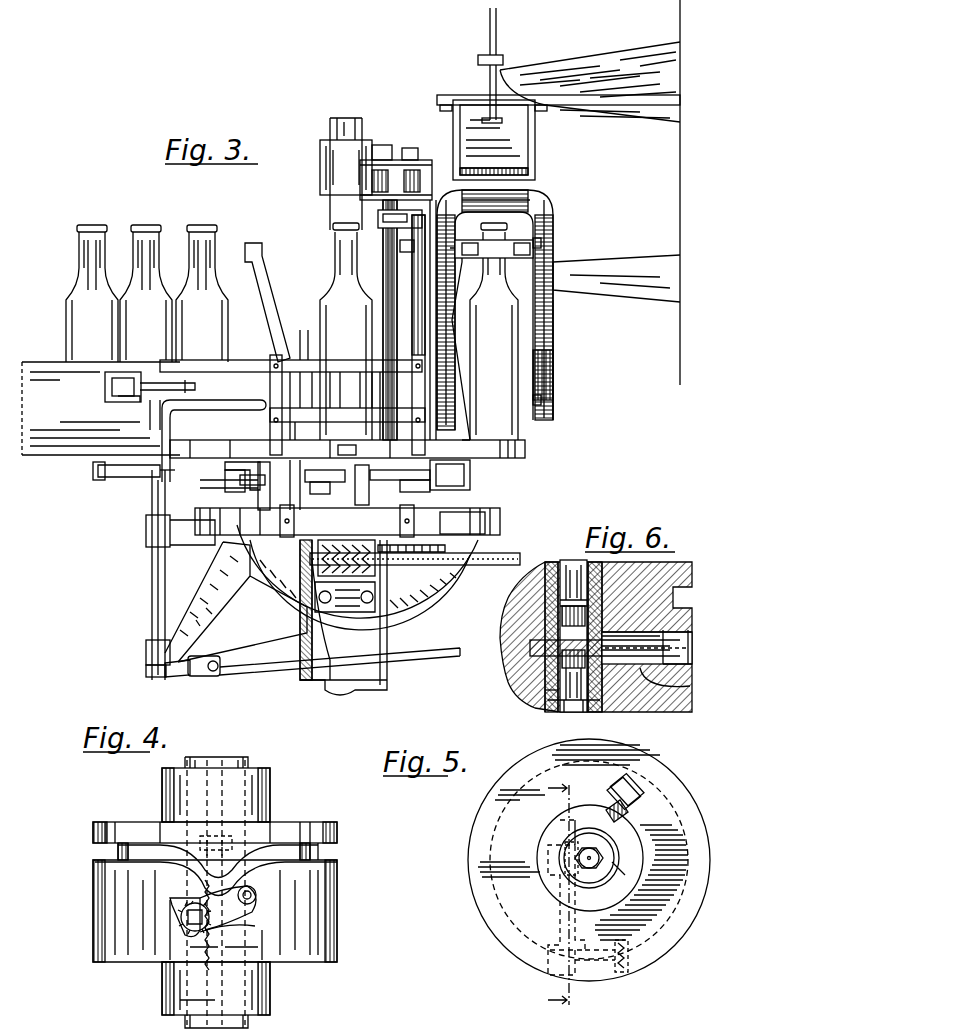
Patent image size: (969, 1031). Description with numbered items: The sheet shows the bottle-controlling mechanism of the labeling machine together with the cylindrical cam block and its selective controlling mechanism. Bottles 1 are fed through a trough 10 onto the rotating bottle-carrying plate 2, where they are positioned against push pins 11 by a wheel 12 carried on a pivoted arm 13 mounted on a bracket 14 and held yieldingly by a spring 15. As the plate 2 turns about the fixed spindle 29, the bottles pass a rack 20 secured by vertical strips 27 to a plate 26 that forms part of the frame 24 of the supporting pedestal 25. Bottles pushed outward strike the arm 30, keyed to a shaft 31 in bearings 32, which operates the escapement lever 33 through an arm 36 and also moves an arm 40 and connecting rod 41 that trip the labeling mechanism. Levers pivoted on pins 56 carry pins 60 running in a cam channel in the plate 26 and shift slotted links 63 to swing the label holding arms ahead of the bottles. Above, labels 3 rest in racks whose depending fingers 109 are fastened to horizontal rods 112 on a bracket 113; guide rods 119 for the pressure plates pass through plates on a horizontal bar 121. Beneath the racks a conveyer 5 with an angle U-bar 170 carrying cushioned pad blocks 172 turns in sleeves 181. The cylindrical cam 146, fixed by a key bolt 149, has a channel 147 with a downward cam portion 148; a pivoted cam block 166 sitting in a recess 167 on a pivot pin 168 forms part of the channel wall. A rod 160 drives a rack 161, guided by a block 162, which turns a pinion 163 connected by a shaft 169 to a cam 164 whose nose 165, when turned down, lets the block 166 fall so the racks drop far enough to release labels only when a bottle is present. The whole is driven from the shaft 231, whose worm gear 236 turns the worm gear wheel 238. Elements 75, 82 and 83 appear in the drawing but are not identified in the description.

In FIG. 3, the bottle 1 is at (107, 250).
In FIG. 3, the bottle-carrying table or plate 2 is at (525, 448).
In FIG. 3, the labels 3 is at (502, 137).
In FIG. 3, the conveyer or picker 5 is at (560, 233).
In FIG. 3, the trough 10 is at (101, 408).
In FIG. 3, the pins 11 is at (309, 338).
In FIG. 3, the wheel 12 is at (162, 382).
In FIG. 3, the pivoted arm 13 is at (154, 430).
In FIG. 3, the bracket 14 is at (120, 400).
In FIG. 3, the spring 15 is at (105, 383).
In FIG. 3, the rack 20 is at (246, 360).
In FIG. 3, the frame 24 is at (452, 588).
In FIG. 3, the supporting pedestal 25 is at (300, 680).
In FIG. 3, the plate 26 is at (478, 520).
In FIG. 3, the vertical strips 27 is at (270, 385).
In FIG. 3, the fixed shaft or spindle 29 is at (345, 130).
In FIG. 3, the arm or lever 30 is at (242, 402).
In FIG. 3, the shaft 31 is at (150, 585).
In FIG. 3, the bearings 32 is at (165, 548).
In FIG. 3, the escapement lever or finger 33 is at (324, 447).
In FIG. 3, the arm 36 is at (112, 480).
In FIG. 3, the arm 40 is at (178, 678).
In FIG. 3, the connecting rod 41 is at (256, 675).
In FIG. 3, the pins 56 is at (224, 462).
In FIG. 3, the pins 60 is at (257, 500).
In FIG. 3, the slotted links 63 is at (312, 492).
In FIG. 3, the arm 75 is at (270, 300).
In FIG. 3, the valve head 82 is at (376, 163).
In FIG. 3, the valve body 83 is at (395, 290).
In FIG. 3, the depending finger 109 is at (535, 145).
In FIG. 3, the parallel horizontal rods 112 is at (558, 116).
In FIG. 3, the bracket 113 is at (594, 62).
In FIG. 3, the rod 119 is at (496, 38).
In FIG. 3, the horizontal bar 121 is at (478, 59).
In FIG. 6, the cylindrical cam 146 is at (672, 712).
In FIG. 4, the cylindrical cam 146 is at (306, 812).
In FIG. 5, the cylindrical cam 146 is at (589, 860).
In FIG. 4, the channel 147 is at (330, 852).
In FIG. 4, the cam portion 148 is at (170, 880).
In FIG. 5, the key bolt 149 is at (638, 800).
In FIG. 6, the rod 160 is at (574, 714).
In FIG. 4, the rod 160 is at (215, 993).
In FIG. 6, the rack 161 is at (550, 710).
In FIG. 4, the rack 161 is at (240, 947).
In FIG. 6, the block 162 is at (562, 572).
In FIG. 4, the block 162 is at (236, 848).
In FIG. 5, the block 162 is at (612, 878).
In FIG. 4, the pinion 163 is at (182, 905).
In FIG. 6, the cam 164 is at (692, 642).
In FIG. 4, the cam 164 is at (182, 920).
In FIG. 6, the nose 165 is at (680, 632).
In FIG. 4, the nose 165 is at (205, 900).
In FIG. 6, the pivoted cam block 166 is at (690, 618).
In FIG. 4, the pivoted cam block 166 is at (250, 905).
In FIG. 5, the pivoted cam block 166 is at (592, 975).
In FIG. 4, the niche or recess 167 is at (232, 921).
In FIG. 4, the pivot pin 168 is at (252, 888).
In FIG. 6, the rod or shaft 169 is at (700, 668).
In FIG. 5, the rod or shaft 169 is at (562, 925).
In FIG. 3, the angle U-bar 170 is at (553, 332).
In FIG. 3, the cushioned block 172 is at (540, 378).
In FIG. 3, the sleeves 181 is at (612, 272).
In FIG. 3, the shaft 231 is at (470, 566).
In FIG. 3, the worm gear 236 is at (348, 540).
In FIG. 3, the worm gear wheel 238 is at (440, 543).